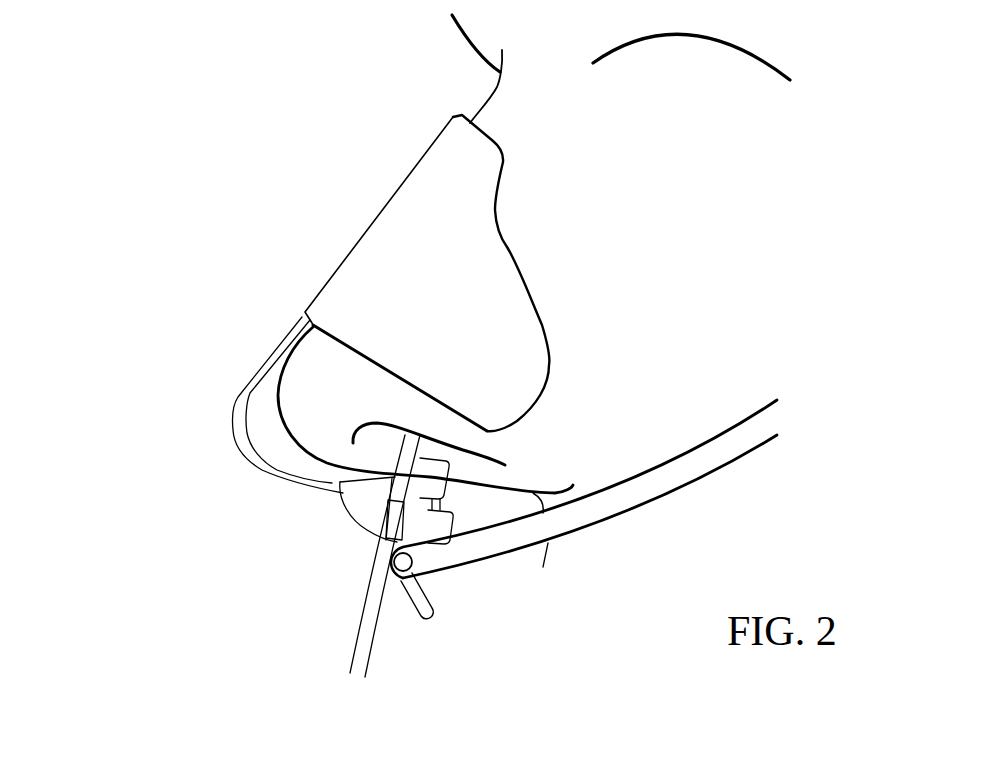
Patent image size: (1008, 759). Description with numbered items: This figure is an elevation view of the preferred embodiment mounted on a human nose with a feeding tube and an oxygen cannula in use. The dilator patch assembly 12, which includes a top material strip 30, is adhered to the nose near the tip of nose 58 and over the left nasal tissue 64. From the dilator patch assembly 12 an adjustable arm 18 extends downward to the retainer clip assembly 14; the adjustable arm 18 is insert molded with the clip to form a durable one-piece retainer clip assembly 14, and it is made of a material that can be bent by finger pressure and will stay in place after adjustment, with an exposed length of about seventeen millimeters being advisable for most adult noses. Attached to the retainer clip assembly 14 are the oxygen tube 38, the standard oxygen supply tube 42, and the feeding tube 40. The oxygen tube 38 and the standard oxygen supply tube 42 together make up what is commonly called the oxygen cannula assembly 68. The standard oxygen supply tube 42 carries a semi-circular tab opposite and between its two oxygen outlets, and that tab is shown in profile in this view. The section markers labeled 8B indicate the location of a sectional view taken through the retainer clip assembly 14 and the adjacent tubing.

The dilator patch assembly 12 is at (516, 257).
The retainer clip assembly 14 is at (335, 525).
The adjustable arm 18 is at (233, 432).
The top material strip 30 is at (477, 162).
The oxygen tube 38 is at (712, 460).
The feeding tube 40 is at (360, 638).
The standard oxygen supply tube 42 is at (430, 484).
The tip of nose 58 is at (307, 412).
The left nasal tissue 64 is at (550, 332).
The oxygen cannula assembly 68 is at (399, 620).
The section line 8B is at (302, 242).